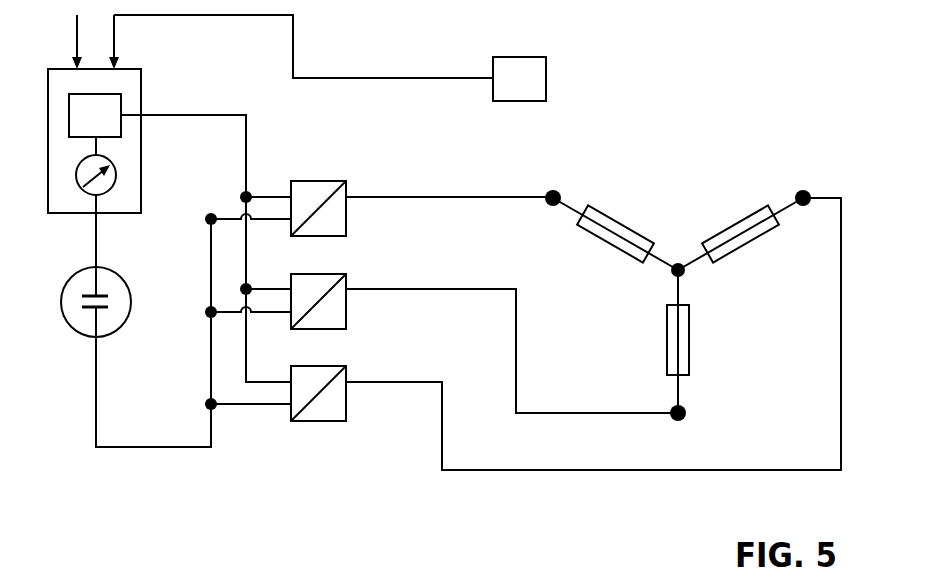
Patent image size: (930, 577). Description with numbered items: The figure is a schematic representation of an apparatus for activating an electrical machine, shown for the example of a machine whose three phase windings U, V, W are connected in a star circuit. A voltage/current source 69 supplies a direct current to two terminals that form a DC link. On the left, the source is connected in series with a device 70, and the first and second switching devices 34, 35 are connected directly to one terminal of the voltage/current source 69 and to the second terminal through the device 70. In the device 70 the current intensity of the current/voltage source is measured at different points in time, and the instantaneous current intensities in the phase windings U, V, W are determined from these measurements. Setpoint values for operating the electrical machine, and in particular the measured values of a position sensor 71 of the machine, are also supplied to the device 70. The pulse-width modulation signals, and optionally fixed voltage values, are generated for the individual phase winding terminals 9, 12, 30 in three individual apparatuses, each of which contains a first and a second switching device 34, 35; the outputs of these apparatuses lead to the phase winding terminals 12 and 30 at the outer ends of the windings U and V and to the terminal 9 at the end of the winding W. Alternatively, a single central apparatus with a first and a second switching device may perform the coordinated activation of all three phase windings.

The device 70 is at (141, 92).
The voltage/current source 69 is at (131, 298).
The position sensor 71 is at (546, 70).
The first switching device 34 is at (317, 181).
The second switching device 35 is at (346, 217).
The phase winding terminal 12 is at (553, 198).
The phase winding terminal 30 is at (803, 198).
The phase winding terminal 9 is at (678, 413).
The phase winding U is at (636, 207).
The phase winding V is at (762, 262).
The phase winding W is at (640, 336).